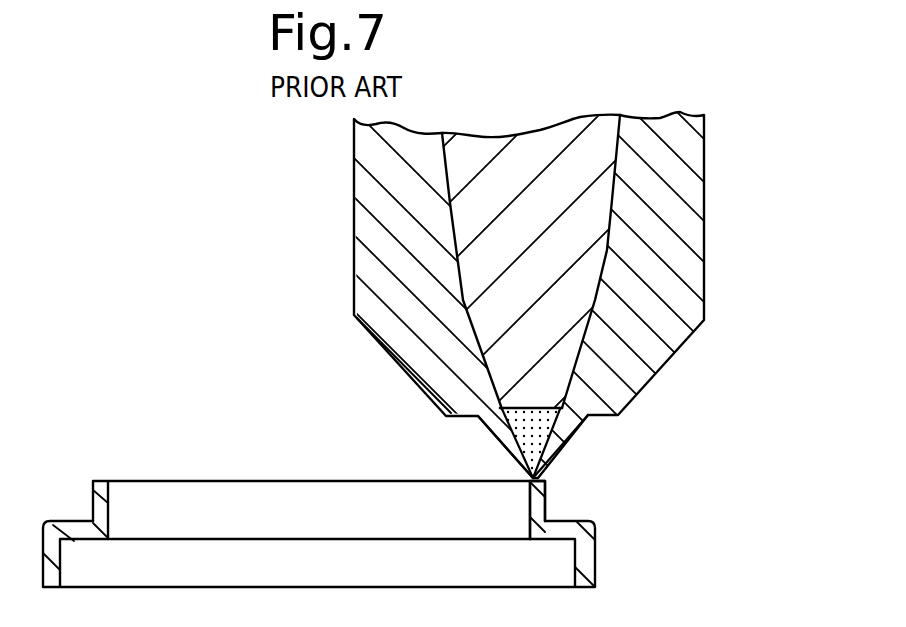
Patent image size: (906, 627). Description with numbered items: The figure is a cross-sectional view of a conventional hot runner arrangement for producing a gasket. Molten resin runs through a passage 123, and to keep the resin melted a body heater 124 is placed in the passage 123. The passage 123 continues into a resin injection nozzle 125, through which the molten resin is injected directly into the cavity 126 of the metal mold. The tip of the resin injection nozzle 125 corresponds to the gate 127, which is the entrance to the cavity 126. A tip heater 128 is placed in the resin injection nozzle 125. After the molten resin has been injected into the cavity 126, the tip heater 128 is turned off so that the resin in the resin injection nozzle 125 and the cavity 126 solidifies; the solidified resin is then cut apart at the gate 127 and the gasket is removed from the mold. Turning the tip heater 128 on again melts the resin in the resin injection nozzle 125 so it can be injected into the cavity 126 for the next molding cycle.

The passage 123 is at (682, 178).
The body heater 124 is at (605, 240).
The resin injection nozzle 125 is at (604, 442).
The cavity 126 is at (590, 545).
The gate 127 is at (545, 495).
The tip heater 128 is at (513, 424).